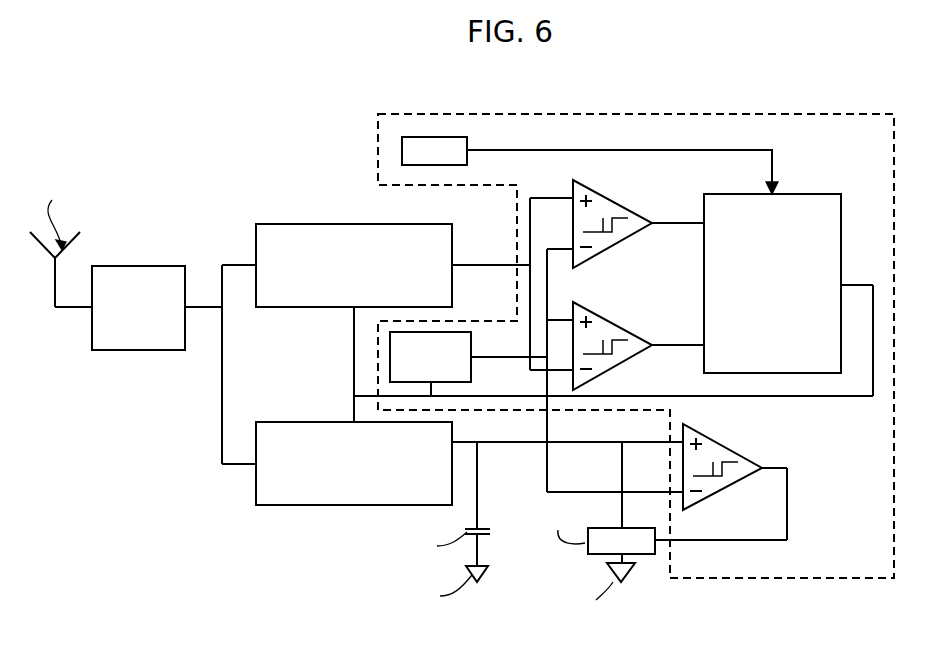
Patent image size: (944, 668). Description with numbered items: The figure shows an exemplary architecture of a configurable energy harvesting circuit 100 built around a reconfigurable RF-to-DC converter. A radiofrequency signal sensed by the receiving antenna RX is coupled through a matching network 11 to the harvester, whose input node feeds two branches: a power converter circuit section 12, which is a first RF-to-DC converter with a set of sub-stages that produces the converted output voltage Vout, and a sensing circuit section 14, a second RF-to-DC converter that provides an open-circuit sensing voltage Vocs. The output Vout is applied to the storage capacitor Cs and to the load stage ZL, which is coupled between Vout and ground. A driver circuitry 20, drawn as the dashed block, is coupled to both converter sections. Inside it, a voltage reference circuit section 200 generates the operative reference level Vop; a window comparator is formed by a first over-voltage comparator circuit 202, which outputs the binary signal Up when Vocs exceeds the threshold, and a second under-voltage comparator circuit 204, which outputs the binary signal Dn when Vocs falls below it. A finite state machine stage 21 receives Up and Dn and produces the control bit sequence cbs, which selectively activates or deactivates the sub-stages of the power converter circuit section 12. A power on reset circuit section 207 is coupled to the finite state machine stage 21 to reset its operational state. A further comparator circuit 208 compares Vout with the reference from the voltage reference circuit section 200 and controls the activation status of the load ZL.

The configurable energy harvesting circuit 100 is at (288, 147).
The matching network 11 is at (130, 338).
The sensing circuit section 14 is at (305, 289).
The power converter circuit section 12 is at (298, 493).
The driver circuitry 20 is at (808, 113).
The power on reset circuit section 207 is at (462, 137).
The first over-voltage comparator circuit 202 is at (619, 200).
The second under-voltage comparator circuit 204 is at (619, 322).
The further comparator circuit 208 is at (748, 456).
The finite state machine stage 21 is at (818, 194).
The voltage reference circuit section 200 is at (392, 370).